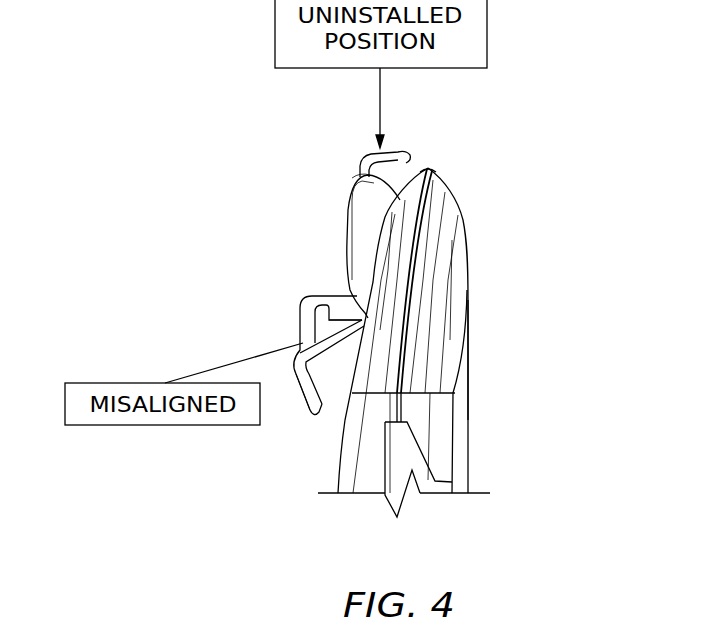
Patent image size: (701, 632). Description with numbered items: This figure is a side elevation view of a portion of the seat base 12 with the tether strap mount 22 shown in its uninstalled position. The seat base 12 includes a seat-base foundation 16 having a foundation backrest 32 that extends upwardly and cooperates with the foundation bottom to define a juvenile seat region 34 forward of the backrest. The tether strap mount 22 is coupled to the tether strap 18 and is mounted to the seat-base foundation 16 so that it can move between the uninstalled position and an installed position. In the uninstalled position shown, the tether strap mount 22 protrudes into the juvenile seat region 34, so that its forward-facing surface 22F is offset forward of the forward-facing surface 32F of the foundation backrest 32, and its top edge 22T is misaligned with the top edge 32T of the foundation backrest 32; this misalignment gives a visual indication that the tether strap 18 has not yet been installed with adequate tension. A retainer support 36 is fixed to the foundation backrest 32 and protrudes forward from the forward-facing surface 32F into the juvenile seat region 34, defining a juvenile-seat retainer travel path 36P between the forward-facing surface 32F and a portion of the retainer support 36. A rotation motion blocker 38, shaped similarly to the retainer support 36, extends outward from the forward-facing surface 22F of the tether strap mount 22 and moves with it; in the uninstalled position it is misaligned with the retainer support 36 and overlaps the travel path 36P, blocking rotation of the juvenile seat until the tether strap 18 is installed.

The seat base 12 is at (497, 303).
The seat-base foundation 16 is at (472, 194).
The tether strap 18 is at (362, 163).
The tether strap mount 22 is at (340, 192).
The top edge of the tether strap mount 22T is at (360, 175).
The forward-facing surface of the tether strap mount 22F is at (345, 217).
The foundation backrest 32 is at (440, 243).
The top edge of the foundation backrest 32T is at (430, 167).
The forward-facing surface of the foundation backrest 32F is at (388, 270).
The juvenile seat region 34 is at (193, 474).
The retainer support 36 is at (284, 303).
The juvenile-seat retainer travel path 36P is at (333, 378).
The rotation motion blocker 38 is at (290, 410).